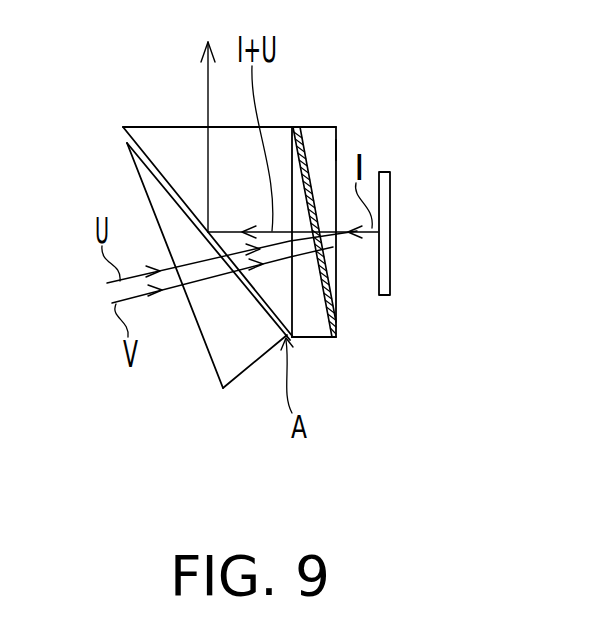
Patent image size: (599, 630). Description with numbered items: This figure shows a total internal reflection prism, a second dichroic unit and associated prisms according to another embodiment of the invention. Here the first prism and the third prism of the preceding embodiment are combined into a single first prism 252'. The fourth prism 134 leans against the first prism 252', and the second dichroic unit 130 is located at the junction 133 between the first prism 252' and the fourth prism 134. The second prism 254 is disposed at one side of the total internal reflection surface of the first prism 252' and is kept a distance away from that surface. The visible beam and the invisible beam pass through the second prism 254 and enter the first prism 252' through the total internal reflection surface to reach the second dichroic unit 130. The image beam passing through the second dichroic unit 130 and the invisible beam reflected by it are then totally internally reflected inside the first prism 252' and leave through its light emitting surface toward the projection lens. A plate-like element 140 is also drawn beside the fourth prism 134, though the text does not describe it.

The second prism 254 is at (147, 183).
The second dichroic unit 130 is at (327, 127).
The fourth prism 134 is at (332, 153).
The junction 133 is at (338, 327).
The light source / plate 140 is at (390, 206).
The first prism 252' is at (322, 370).